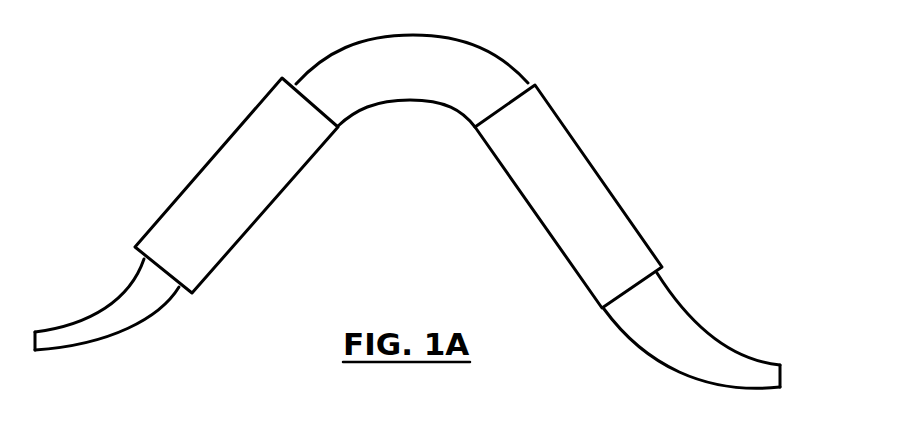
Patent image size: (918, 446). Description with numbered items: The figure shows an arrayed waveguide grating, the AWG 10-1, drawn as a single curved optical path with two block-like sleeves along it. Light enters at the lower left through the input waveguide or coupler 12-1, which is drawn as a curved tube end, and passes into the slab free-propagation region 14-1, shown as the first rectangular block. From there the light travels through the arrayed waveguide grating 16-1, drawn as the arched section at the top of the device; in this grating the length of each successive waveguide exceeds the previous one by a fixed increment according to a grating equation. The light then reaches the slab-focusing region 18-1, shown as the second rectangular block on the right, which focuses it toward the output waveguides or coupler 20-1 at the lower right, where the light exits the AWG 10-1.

The arrayed waveguide grating (AWG) 10-1 is at (580, 61).
The input waveguide or coupler 12-1 is at (133, 332).
The slab free-propagation region 14-1 is at (290, 182).
The arrayed waveguide grating 16-1 is at (407, 128).
The slab-focusing region 18-1 is at (585, 155).
The output waveguides or coupler 20-1 is at (680, 378).